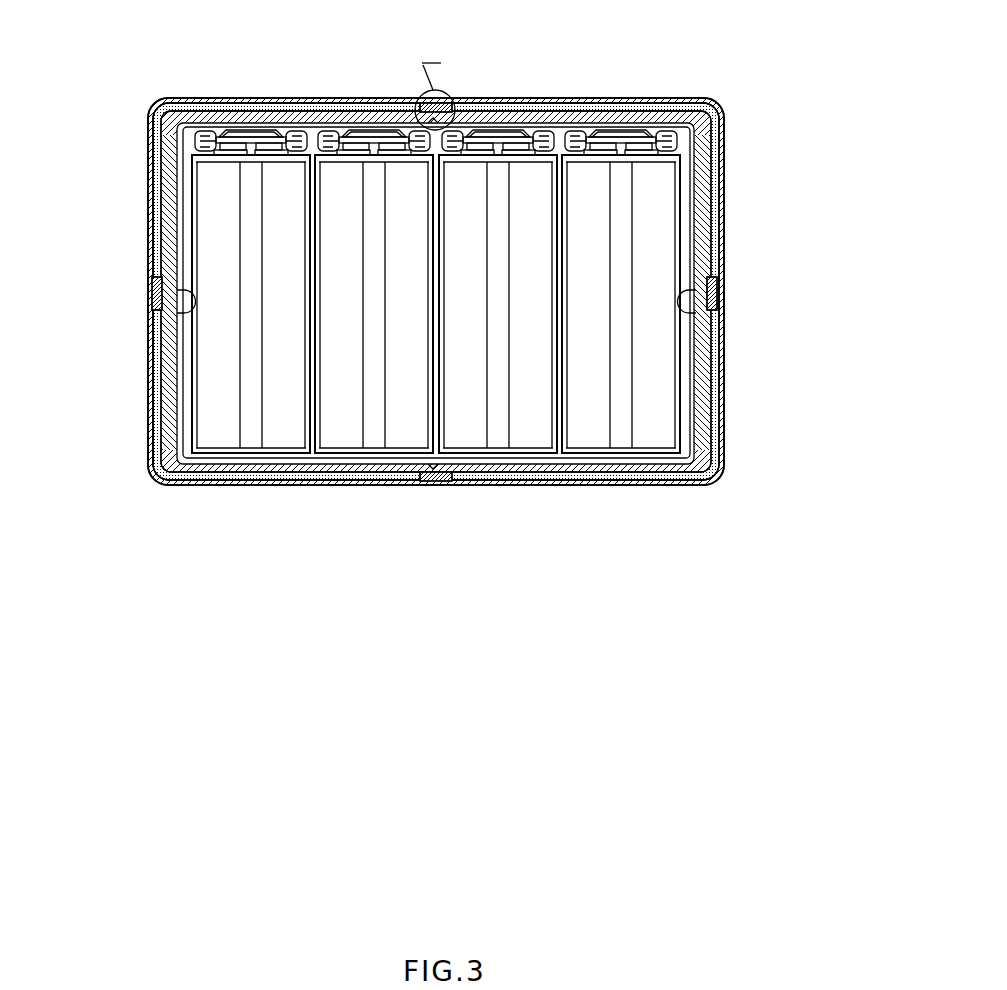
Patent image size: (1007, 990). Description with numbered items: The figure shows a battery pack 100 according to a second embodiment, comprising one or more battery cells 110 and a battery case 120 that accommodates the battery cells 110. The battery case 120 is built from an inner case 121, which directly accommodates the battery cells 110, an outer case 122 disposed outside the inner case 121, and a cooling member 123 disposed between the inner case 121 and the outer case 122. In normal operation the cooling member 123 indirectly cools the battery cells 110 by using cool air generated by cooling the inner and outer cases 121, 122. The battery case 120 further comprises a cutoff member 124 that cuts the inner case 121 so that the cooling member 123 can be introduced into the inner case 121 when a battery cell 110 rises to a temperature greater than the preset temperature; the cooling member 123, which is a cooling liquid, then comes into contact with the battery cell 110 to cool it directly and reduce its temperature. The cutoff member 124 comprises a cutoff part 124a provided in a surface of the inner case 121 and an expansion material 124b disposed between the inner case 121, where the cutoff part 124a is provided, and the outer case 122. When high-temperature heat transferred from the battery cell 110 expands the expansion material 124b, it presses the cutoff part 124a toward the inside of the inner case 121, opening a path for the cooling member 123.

The battery pack 100 is at (660, 70).
The battery cell 110 is at (662, 396).
The battery case 120 is at (502, 264).
The inner case 121 is at (788, 138).
The outer case 122 is at (722, 136).
The cooling member 123 is at (712, 183).
The cutoff member 124 is at (438, 301).
The cutoff part 124a is at (150, 309).
The expansion material 124b is at (152, 294).